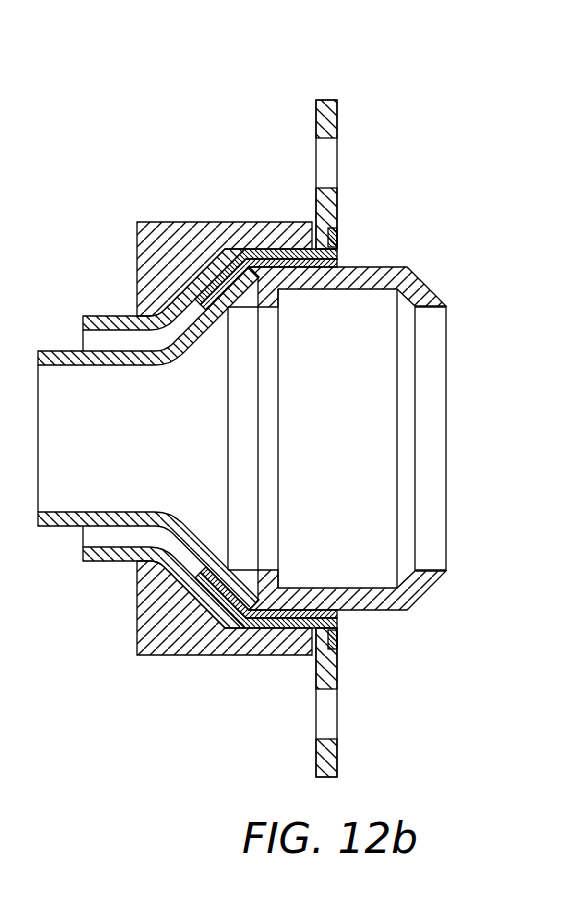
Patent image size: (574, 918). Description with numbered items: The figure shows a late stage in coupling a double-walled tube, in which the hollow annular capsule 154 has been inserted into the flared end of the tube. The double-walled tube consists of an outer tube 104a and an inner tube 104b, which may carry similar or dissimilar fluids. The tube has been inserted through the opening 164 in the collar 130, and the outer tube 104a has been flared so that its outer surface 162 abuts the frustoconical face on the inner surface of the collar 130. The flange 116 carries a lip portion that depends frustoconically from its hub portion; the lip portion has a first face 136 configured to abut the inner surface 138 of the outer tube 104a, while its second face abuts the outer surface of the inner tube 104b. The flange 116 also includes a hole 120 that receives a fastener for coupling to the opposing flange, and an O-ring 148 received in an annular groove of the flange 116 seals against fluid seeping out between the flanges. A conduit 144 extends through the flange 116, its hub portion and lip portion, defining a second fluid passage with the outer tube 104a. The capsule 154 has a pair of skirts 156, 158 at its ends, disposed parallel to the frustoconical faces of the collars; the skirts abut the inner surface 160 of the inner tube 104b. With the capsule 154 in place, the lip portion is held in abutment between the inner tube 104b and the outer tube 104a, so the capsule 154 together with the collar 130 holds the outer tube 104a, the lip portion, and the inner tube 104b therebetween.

The outer tube 104a is at (93, 315).
The inner tube 104b is at (50, 527).
The flange 116 is at (344, 418).
The hole 120 is at (329, 156).
The collar 130 is at (164, 217).
The first face 136 is at (213, 260).
The inner surface 138 is at (236, 560).
The conduit 144 is at (340, 256).
The O-ring 148 is at (334, 239).
The hollow annular capsule 154 is at (384, 379).
The skirt 156 is at (438, 285).
The skirt 158 is at (253, 250).
The inner surface 160 is at (179, 431).
The outer surface 162 is at (185, 272).
The opening 164 is at (137, 313).